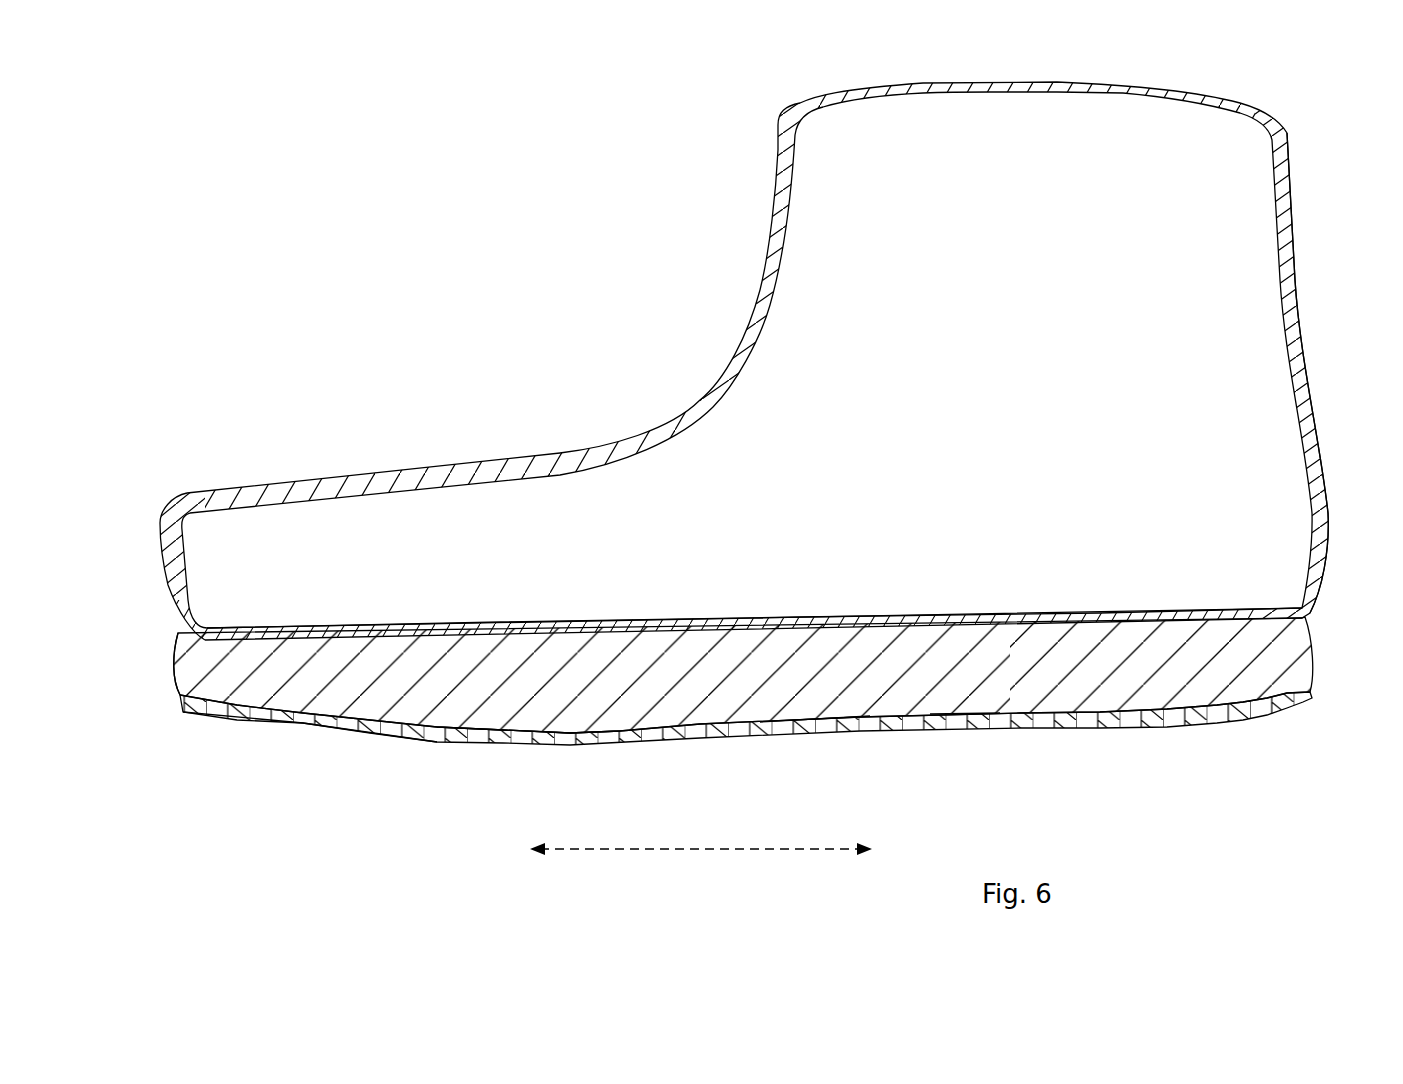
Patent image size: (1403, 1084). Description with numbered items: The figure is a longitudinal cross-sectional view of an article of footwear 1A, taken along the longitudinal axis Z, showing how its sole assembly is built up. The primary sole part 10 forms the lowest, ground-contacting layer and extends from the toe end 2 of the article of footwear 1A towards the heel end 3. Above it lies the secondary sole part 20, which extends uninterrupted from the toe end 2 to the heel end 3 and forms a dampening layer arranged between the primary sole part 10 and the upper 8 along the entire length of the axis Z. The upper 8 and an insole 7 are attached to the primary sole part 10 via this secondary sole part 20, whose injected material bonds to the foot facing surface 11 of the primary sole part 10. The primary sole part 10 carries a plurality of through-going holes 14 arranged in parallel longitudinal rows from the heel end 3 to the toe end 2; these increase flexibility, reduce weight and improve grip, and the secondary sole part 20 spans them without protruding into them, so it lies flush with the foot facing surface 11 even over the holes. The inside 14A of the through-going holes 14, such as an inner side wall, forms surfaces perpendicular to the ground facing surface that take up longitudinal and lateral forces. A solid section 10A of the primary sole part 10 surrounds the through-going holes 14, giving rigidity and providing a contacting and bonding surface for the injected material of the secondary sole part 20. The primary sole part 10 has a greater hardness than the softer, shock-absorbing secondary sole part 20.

The article of footwear 1A is at (543, 747).
The toe end 2 is at (162, 679).
The heel end 3 is at (1345, 611).
The insole 7 is at (860, 615).
The upper 8 is at (672, 430).
The primary sole part 10 is at (1318, 702).
The solid section 10A is at (318, 723).
The foot facing surface 11 is at (966, 705).
The through-going holes 14 is at (849, 734).
The inside of the through-going holes 14A is at (467, 735).
The secondary sole part 20 is at (751, 674).
The longitudinal axis Z is at (735, 851).